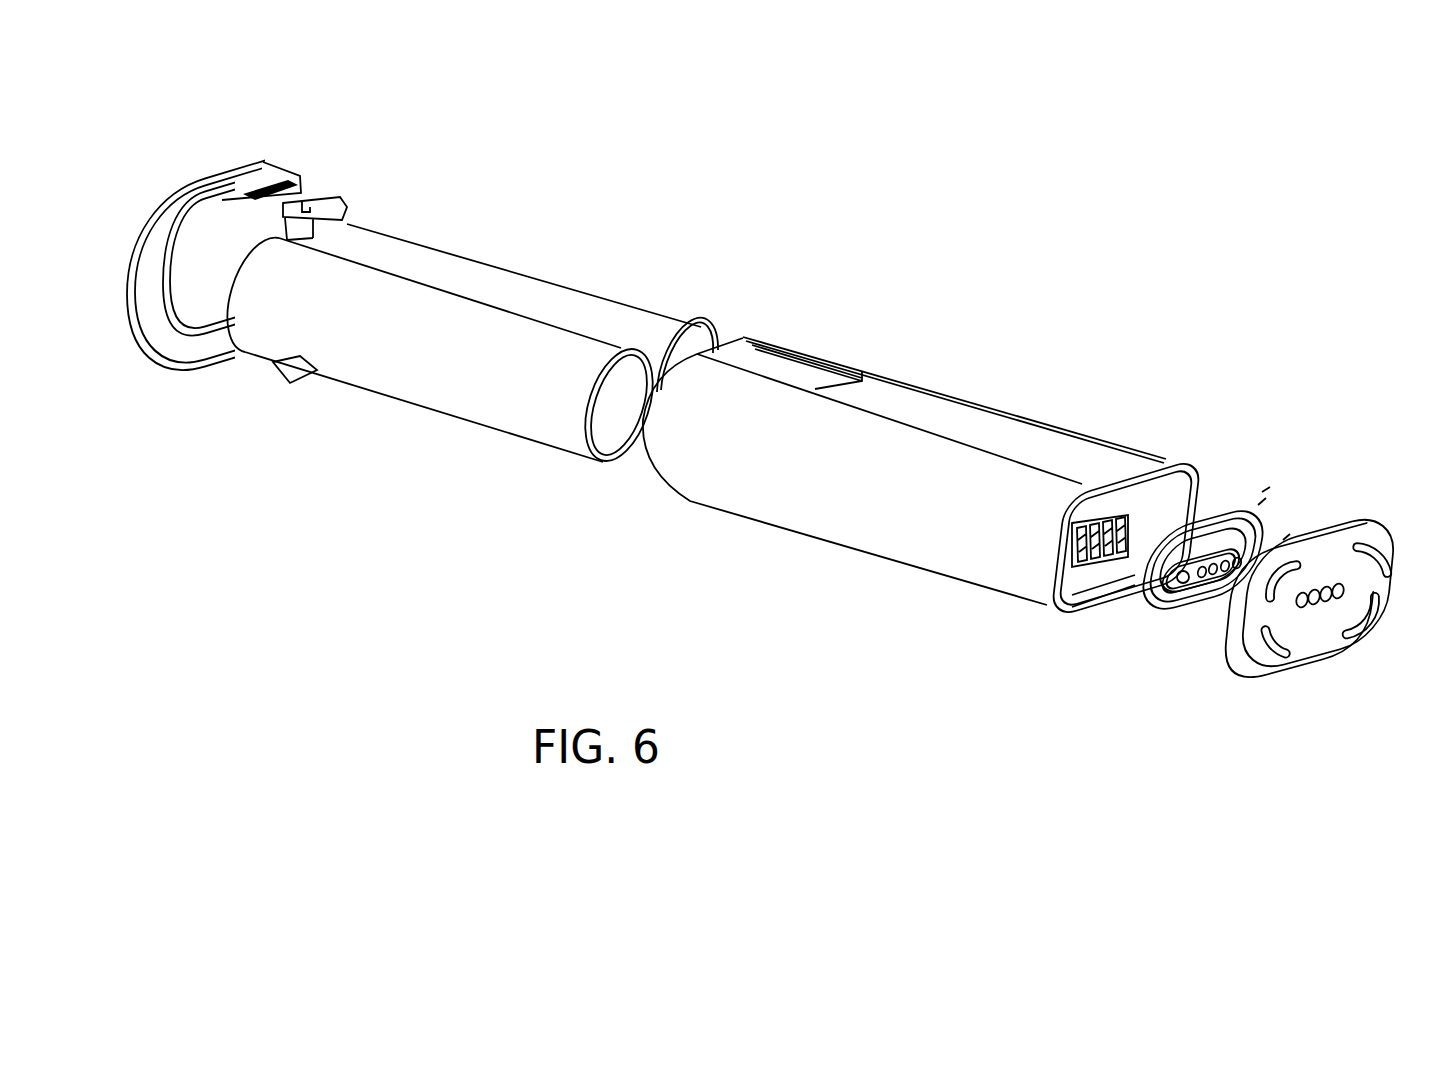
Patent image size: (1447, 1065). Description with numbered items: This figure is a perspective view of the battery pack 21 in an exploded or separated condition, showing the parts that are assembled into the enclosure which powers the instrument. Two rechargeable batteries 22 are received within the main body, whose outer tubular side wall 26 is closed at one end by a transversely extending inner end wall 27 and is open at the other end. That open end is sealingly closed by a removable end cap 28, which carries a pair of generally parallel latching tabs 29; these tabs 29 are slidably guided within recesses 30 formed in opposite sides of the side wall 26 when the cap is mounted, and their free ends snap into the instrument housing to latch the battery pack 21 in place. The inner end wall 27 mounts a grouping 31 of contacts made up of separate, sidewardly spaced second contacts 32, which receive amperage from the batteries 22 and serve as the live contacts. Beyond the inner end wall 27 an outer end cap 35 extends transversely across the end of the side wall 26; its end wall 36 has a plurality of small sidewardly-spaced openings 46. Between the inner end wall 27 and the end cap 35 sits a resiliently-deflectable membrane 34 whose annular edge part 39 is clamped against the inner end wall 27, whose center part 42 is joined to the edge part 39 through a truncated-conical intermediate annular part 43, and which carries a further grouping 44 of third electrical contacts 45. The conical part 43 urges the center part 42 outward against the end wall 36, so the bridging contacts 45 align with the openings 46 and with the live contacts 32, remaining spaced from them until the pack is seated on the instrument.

The battery pack 21 is at (978, 241).
The rechargeable batteries 22 is at (455, 262).
The outer tubular side wall 26 is at (967, 407).
The inner end wall 27 is at (1150, 490).
The end cap 28 is at (173, 205).
The latching tabs 29 is at (342, 200).
The recesses 30 is at (790, 363).
The grouping of contacts 31 is at (1070, 543).
The second contacts 32 is at (1135, 517).
The membrane 34 is at (1268, 490).
The outer end cap 35 is at (1325, 665).
The end wall 36 is at (1308, 642).
The edge part 39 is at (1263, 500).
The center part 42 is at (1187, 577).
The intermediate annular part 43 is at (1233, 537).
The further grouping of electrical contacts 44 is at (1213, 587).
The third electrical contacts 45 is at (1287, 537).
The openings 46 is at (1340, 588).